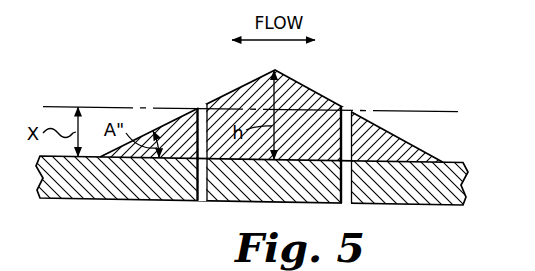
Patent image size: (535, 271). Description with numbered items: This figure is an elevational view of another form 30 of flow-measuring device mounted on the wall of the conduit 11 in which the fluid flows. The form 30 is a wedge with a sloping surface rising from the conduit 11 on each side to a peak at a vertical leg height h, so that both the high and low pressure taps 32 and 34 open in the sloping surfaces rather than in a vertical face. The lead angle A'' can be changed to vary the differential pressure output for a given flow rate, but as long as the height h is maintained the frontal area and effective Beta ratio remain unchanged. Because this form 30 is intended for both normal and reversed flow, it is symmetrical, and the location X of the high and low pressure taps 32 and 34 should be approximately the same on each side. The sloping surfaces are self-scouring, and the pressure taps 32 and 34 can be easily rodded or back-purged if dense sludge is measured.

The conduit 11 is at (107, 190).
The form 30 is at (298, 88).
The high pressure tap 32 is at (201, 107).
The low pressure tap 34 is at (345, 108).